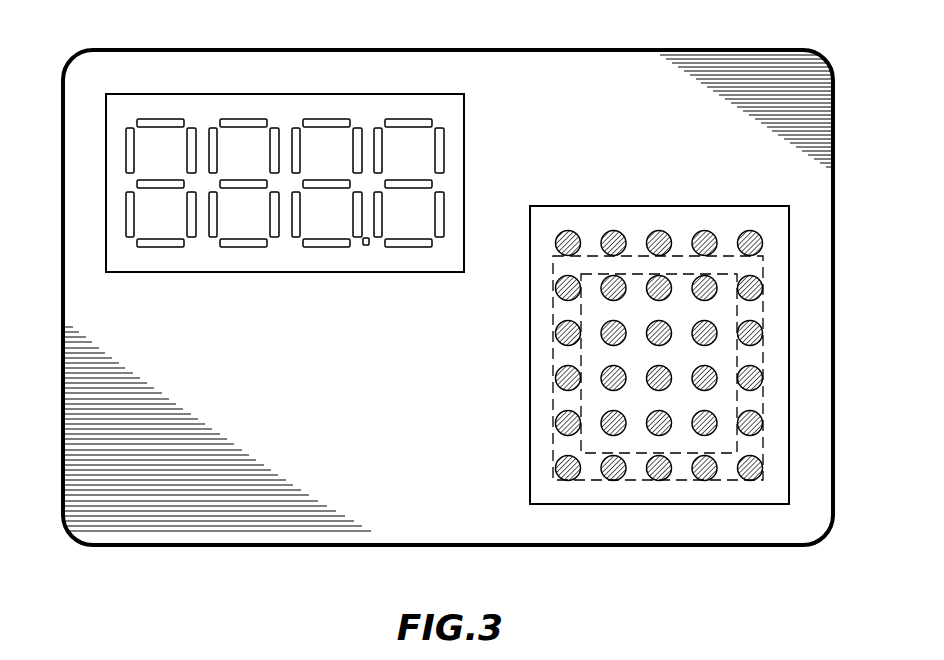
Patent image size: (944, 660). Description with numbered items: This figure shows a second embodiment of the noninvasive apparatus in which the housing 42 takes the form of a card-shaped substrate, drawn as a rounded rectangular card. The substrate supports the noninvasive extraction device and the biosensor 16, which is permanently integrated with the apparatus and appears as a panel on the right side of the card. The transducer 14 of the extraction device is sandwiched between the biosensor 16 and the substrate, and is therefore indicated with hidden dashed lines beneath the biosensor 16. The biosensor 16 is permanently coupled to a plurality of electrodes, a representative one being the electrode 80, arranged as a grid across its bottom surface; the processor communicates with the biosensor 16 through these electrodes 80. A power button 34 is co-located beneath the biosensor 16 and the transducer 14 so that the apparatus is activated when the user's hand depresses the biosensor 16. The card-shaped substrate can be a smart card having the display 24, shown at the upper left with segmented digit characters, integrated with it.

The housing 42 is at (62, 97).
The display 24 is at (464, 103).
The biosensor 16 is at (789, 212).
The transducer 14 is at (763, 268).
The power button 34 is at (737, 355).
The electrode 80 is at (762, 425).